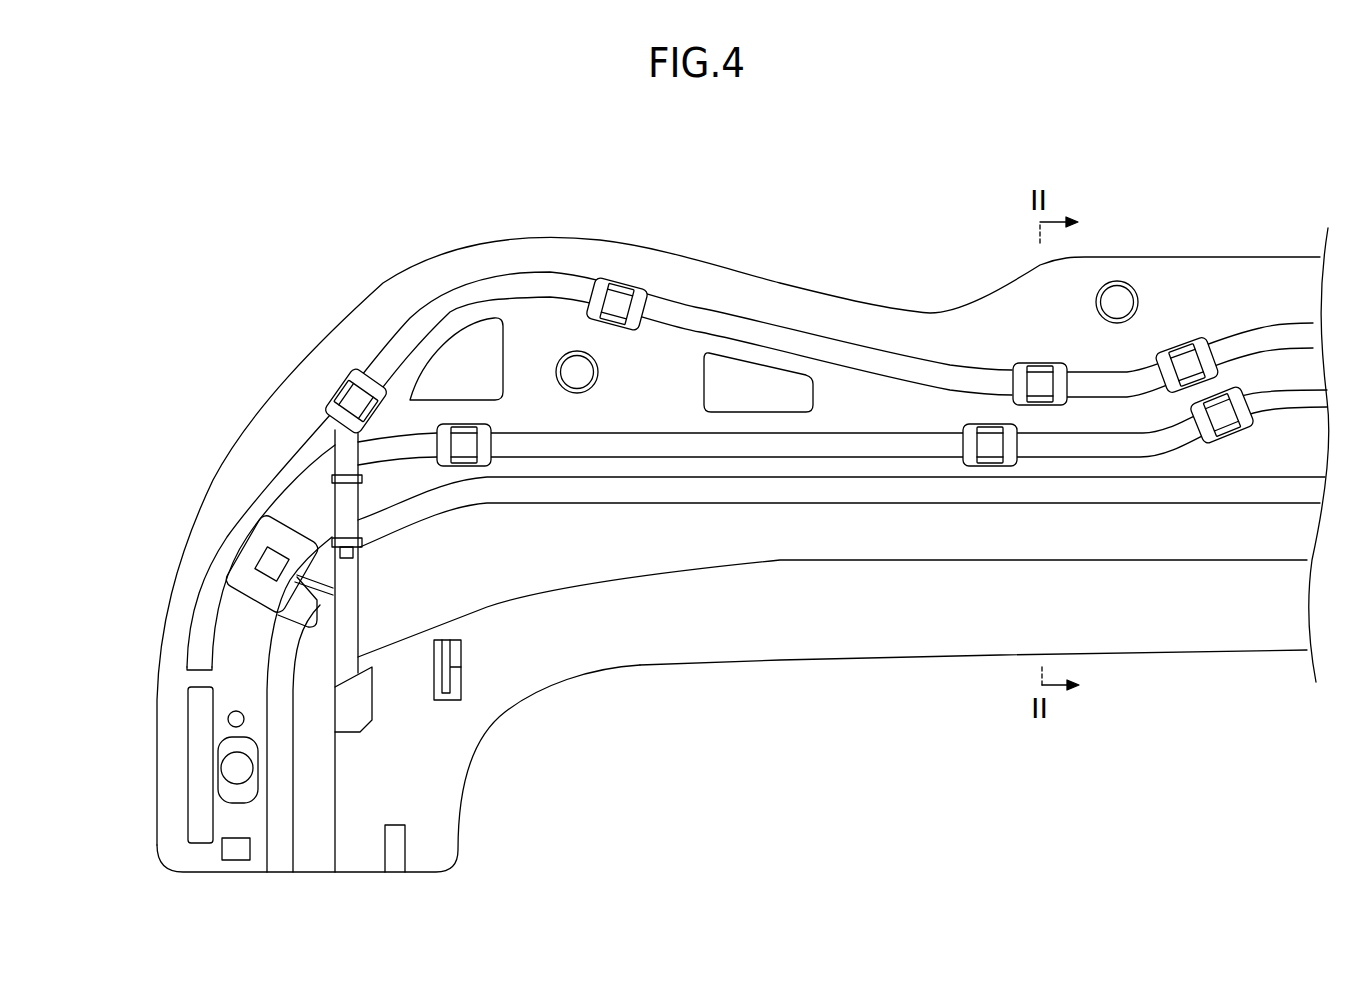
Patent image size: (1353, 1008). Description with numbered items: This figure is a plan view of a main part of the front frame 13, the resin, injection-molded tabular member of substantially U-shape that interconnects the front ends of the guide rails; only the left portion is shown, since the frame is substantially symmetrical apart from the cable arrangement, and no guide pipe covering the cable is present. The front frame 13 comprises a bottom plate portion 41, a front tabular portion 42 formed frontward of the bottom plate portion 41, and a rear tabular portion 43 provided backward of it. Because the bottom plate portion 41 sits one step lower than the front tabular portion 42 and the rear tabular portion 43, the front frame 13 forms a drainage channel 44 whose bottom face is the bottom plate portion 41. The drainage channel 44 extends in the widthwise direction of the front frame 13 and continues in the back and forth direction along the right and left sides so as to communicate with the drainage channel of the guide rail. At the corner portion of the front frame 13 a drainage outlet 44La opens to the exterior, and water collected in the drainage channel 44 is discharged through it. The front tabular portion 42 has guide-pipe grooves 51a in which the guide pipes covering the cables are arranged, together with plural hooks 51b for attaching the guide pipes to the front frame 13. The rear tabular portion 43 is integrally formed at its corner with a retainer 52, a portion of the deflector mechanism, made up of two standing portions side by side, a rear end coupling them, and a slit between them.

The front frame 13 is at (823, 262).
The bottom plate portion 41 is at (848, 535).
The front tabular portion 42 is at (666, 395).
The rear tabular portion 43 is at (668, 634).
The drainage channel 44 is at (668, 551).
The drainage outlet 44La is at (240, 543).
The guide-pipe groove 51a is at (537, 447).
The hook 51b is at (992, 420).
The retainer 52 is at (478, 686).